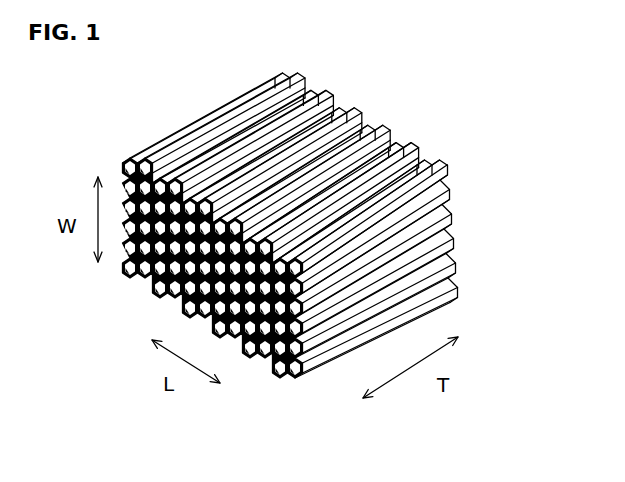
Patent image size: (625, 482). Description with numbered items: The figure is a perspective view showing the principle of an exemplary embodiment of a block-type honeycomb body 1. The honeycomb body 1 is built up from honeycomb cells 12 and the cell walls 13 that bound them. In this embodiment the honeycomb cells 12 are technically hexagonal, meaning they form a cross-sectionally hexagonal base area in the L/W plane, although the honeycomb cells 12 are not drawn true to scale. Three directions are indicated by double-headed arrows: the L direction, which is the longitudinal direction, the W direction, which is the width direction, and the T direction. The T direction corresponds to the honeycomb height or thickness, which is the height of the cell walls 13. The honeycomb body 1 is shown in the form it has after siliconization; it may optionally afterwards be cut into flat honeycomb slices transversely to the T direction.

The honeycomb body 1 is at (292, 225).
The honeycomb cell 12 is at (121, 175).
The cell wall 13 is at (438, 311).